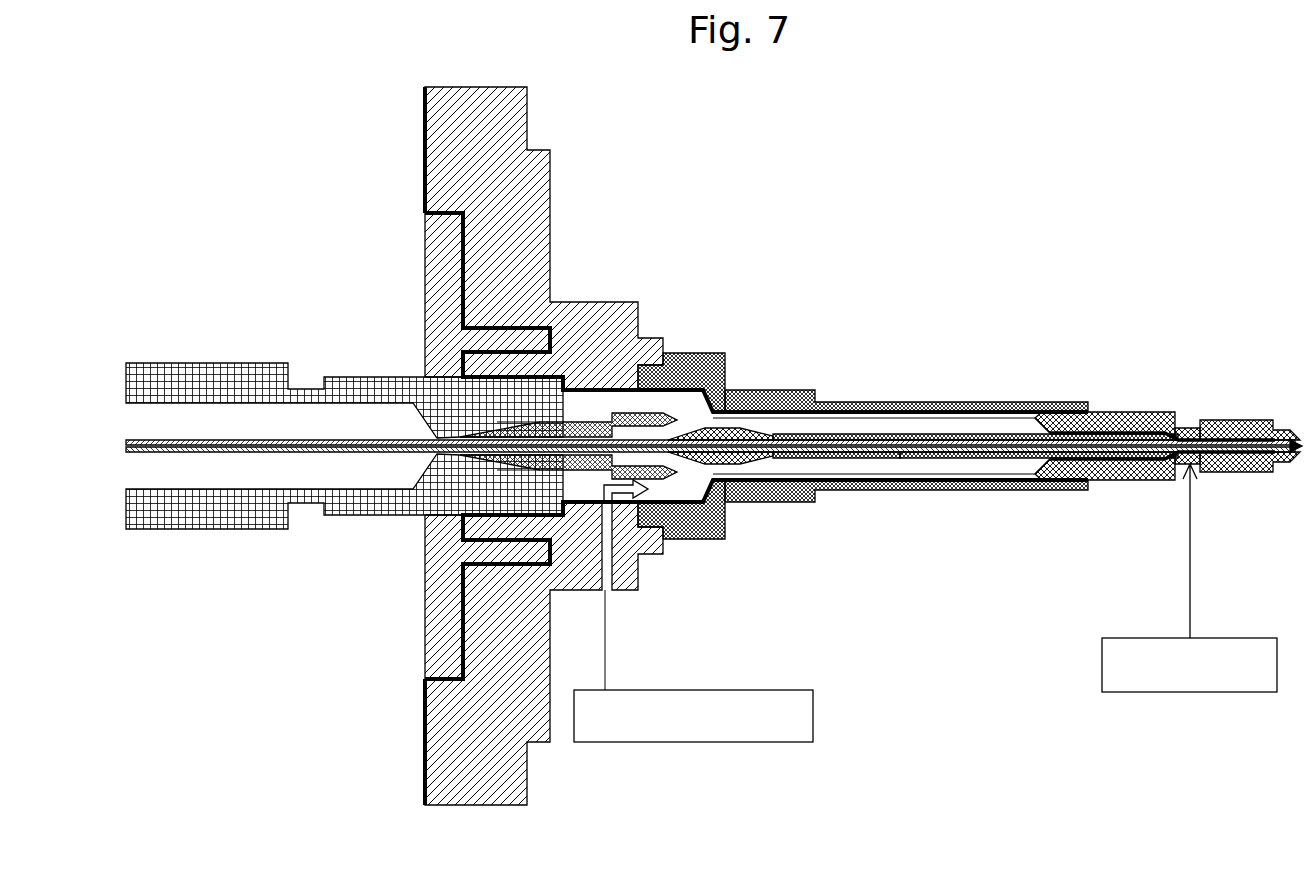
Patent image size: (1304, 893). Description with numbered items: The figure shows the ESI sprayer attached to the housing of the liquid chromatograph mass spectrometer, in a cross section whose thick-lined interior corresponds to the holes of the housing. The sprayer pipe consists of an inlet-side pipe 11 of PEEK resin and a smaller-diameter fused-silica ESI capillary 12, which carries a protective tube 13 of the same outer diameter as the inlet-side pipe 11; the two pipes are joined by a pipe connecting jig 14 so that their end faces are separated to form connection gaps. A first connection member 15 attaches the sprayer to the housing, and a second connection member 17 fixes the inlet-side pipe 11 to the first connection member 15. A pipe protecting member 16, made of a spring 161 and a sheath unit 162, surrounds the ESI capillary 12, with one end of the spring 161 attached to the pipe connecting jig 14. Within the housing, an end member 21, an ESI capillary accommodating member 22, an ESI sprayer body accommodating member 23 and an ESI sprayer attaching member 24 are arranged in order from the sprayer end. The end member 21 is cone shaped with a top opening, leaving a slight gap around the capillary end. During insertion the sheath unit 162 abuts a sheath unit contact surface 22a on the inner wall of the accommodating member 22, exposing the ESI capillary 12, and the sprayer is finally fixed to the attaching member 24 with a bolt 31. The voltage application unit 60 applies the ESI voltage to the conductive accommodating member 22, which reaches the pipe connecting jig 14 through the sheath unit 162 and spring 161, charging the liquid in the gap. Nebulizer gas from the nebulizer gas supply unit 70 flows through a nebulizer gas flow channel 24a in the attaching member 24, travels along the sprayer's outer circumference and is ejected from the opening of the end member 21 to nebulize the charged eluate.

The inlet-side pipe 11 is at (332, 452).
The ESI capillary 12 is at (1137, 413).
The protective tube 13 is at (880, 437).
The pipe connecting jig 14 is at (747, 403).
The first connection member 15 is at (360, 512).
The pipe protecting member 16 is at (950, 545).
The spring 161 is at (862, 455).
The sheath unit 162 is at (955, 455).
The second connection member 17 is at (687, 537).
The end member 21 is at (1285, 463).
The ESI capillary accommodating member 22 is at (1098, 481).
The sheath unit contact surface 22a is at (1180, 423).
The ESI sprayer body accommodating member 23 is at (1012, 489).
The ESI sprayer attaching member 24 is at (527, 773).
The nebulizer gas flow channel 24a is at (612, 592).
The bolt 31 is at (423, 577).
The voltage application unit 60 is at (1223, 692).
The nebulizer gas supply unit 70 is at (697, 742).